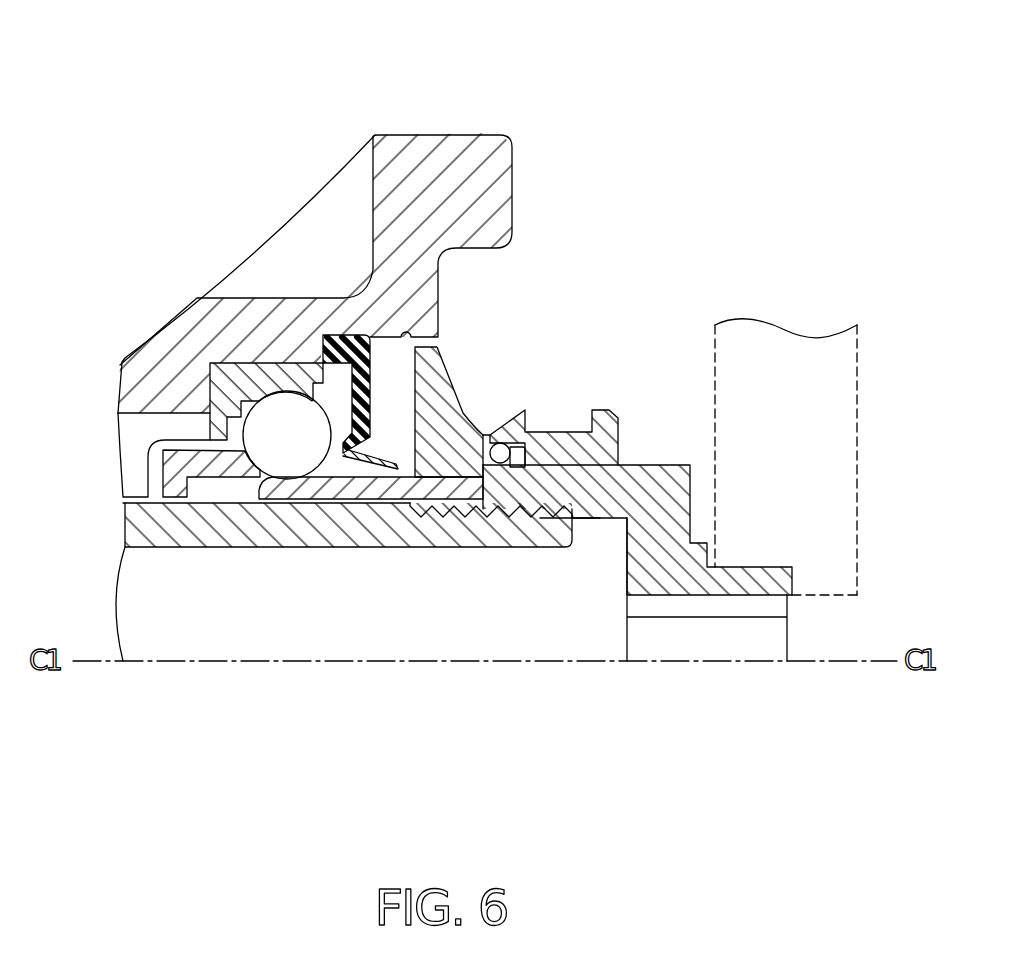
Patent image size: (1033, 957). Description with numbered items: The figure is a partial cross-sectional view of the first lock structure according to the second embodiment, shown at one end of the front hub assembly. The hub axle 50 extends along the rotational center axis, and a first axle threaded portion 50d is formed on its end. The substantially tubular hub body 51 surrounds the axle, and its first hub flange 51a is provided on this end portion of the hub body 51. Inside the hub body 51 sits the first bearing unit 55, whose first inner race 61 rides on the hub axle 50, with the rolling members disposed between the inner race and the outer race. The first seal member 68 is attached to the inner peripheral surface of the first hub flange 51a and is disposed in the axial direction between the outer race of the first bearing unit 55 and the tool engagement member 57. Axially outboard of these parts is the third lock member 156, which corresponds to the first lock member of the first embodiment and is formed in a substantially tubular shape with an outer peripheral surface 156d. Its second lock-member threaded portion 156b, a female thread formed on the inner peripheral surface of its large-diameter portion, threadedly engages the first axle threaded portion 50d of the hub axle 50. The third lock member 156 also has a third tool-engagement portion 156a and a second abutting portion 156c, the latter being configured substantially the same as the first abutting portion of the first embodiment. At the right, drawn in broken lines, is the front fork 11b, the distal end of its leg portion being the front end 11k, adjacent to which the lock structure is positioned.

The hub body 51 is at (158, 297).
The first hub flange 51a is at (441, 155).
The first bearing unit 55 is at (195, 370).
The tool engagement member 57 is at (453, 355).
The first seal member 68 is at (340, 335).
The first inner race 61 is at (318, 507).
The hub axle 50 is at (237, 563).
The first axle threaded portion 50d is at (515, 507).
The third lock member 156 is at (669, 460).
The third tool-engagement portion 156a is at (697, 596).
The second lock-member threaded portion 156b is at (532, 530).
The second abutting portion 156c is at (458, 512).
The outer peripheral surface 156d is at (617, 412).
The front fork 11b is at (868, 380).
The front end 11k is at (838, 458).